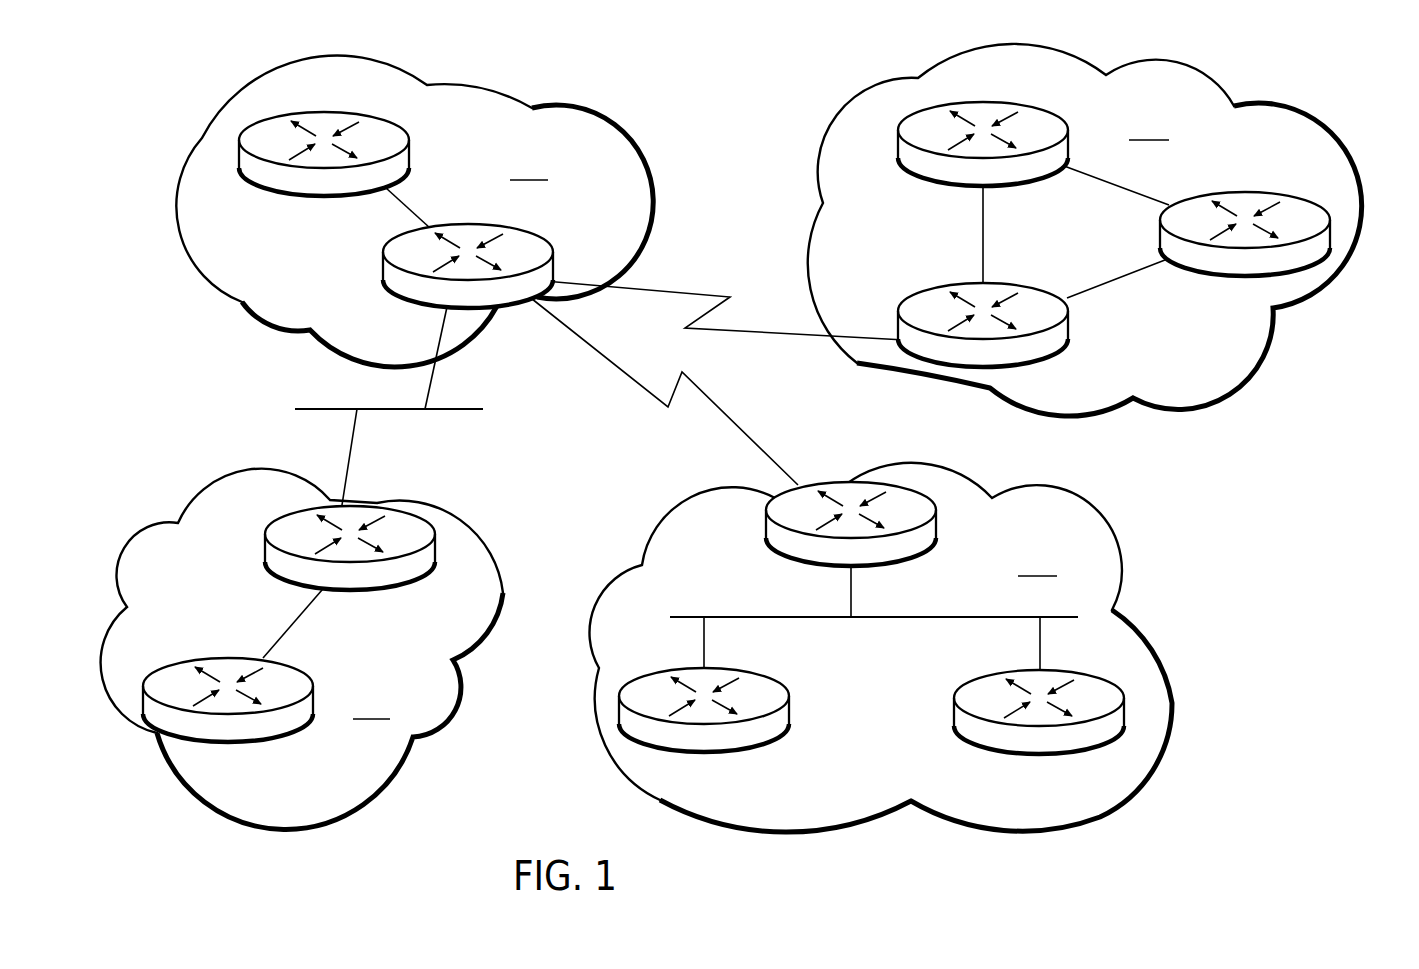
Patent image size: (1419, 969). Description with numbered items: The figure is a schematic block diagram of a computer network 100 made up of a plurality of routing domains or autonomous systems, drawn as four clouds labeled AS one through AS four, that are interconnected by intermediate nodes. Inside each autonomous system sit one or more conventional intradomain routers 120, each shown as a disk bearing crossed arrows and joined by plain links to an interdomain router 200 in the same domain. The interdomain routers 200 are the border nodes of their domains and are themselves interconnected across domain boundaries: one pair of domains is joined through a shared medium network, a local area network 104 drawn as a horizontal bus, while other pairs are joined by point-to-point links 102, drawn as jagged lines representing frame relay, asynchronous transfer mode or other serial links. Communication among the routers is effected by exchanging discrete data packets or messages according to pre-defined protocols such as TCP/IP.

The computer network 100 is at (1390, 119).
The point-to-point links 102 is at (805, 340).
The local area networks 104 is at (452, 410).
The intradomain routers 120 is at (322, 110).
The interdomain routers 200 is at (536, 234).